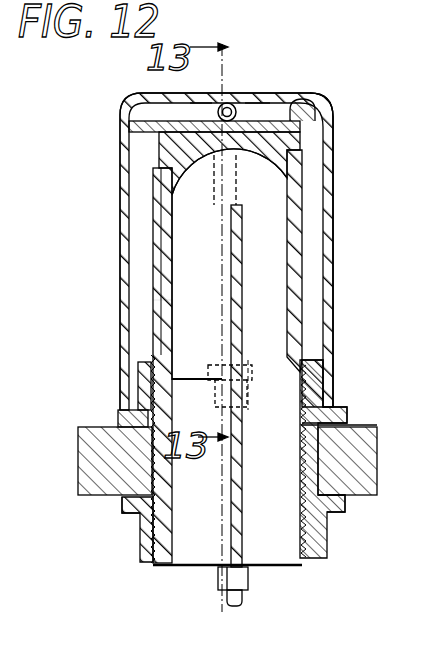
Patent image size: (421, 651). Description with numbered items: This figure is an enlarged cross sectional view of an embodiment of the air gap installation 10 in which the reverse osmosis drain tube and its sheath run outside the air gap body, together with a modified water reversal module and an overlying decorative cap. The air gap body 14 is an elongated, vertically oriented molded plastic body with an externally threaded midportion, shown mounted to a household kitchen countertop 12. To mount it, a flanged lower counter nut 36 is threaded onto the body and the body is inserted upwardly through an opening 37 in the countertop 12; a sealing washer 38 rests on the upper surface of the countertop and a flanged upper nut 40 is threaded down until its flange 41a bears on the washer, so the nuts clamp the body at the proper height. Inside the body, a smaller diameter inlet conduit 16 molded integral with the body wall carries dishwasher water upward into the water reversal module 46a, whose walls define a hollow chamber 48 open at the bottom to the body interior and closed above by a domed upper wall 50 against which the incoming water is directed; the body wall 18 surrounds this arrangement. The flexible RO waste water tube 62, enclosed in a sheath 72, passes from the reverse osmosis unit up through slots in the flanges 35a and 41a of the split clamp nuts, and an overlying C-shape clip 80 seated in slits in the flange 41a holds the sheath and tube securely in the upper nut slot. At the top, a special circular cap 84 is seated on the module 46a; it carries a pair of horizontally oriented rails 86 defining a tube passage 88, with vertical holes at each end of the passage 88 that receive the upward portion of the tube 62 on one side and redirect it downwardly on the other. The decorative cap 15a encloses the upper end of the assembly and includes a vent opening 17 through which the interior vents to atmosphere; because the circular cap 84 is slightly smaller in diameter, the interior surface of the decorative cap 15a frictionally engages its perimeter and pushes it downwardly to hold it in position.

The fastener assembly 10 is at (110, 227).
The countertop 12 is at (92, 427).
The air gap body 14 is at (143, 195).
The decorative cap 15a is at (325, 105).
The inlet conduit 16 is at (241, 258).
The vent opening 17 is at (124, 170).
The side wall 18 is at (153, 300).
The flange 35a is at (345, 503).
The lower counter nut 36 is at (327, 545).
The opening 37 is at (122, 502).
The sealing washer 38 is at (347, 426).
The upper nut 40 is at (323, 362).
The flange 41a is at (340, 408).
The water reversal module 46a is at (327, 135).
The chamber 48 is at (185, 252).
The domed upper wall 50 is at (247, 160).
The RO waste water tube 62 is at (229, 102).
The sheath 72 is at (248, 578).
The C-shape clip 80 is at (240, 366).
The circular cap 84 is at (308, 94).
The rails 86 is at (198, 94).
The tube passage 88 is at (222, 103).